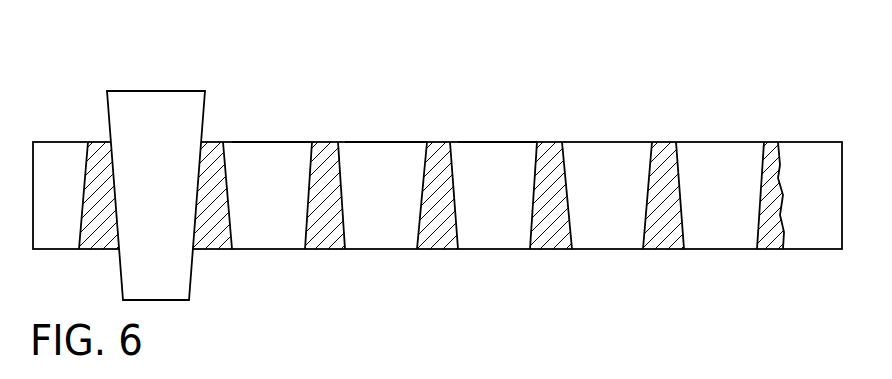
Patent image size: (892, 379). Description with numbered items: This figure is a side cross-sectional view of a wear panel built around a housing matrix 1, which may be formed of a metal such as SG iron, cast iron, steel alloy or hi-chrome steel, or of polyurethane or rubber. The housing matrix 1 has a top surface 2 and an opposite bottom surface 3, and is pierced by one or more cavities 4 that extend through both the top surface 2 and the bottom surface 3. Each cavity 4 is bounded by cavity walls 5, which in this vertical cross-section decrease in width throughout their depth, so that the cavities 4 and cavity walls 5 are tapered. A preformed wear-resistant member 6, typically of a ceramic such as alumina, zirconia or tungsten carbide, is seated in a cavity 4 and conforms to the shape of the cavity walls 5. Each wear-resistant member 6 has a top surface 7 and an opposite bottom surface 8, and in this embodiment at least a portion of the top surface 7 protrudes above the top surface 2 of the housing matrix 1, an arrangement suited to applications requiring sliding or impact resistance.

The housing matrix 1 is at (446, 184).
The top surface 2 is at (390, 249).
The bottom surface 3 is at (525, 142).
The cavity 4 is at (283, 162).
The cavity wall 5 is at (226, 163).
The wear-resistant member 6 is at (147, 142).
The top surface 7 is at (173, 300).
The bottom surface 8 is at (155, 91).